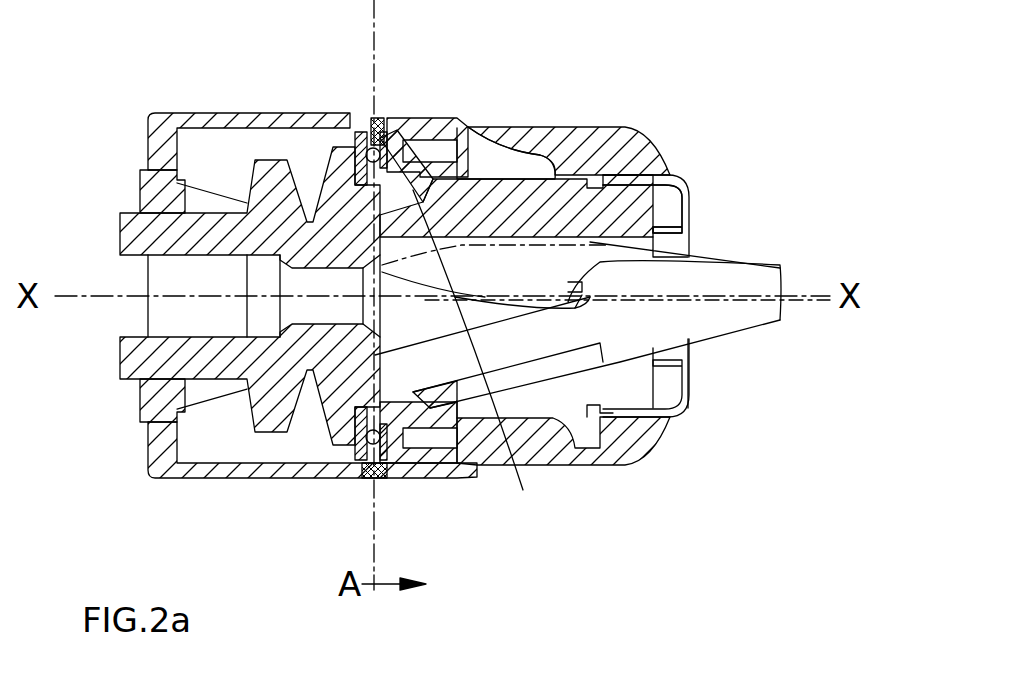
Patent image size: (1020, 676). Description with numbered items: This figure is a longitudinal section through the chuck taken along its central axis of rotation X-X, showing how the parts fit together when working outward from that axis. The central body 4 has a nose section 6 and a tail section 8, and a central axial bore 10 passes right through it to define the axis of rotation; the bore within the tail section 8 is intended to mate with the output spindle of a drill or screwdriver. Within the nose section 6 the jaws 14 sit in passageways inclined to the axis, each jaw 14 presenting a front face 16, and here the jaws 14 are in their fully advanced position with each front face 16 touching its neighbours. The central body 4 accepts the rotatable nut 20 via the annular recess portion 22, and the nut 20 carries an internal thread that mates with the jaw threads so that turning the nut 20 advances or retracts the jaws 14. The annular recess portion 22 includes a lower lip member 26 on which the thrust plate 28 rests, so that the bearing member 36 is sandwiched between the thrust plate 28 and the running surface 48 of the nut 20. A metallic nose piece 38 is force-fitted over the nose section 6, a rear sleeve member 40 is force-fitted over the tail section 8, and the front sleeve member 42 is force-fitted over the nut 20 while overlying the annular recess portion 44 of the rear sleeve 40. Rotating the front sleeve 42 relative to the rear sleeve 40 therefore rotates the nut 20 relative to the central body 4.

The central body 4 is at (228, 378).
The nose section 6 is at (630, 213).
The tail section 8 is at (140, 228).
The central axial bore 10 is at (148, 275).
The jaw 14 is at (562, 335).
The front face 16 is at (705, 318).
The rotatable nut 20 is at (430, 440).
The annular recess portion 22 is at (495, 339).
The lower lip member 26 is at (362, 152).
The thrust plate 28 is at (362, 135).
The bearing member element 36 is at (405, 125).
The metallic nose piece 38 is at (676, 176).
The rear sleeve member 40 is at (150, 129).
The front sleeve member 42 is at (612, 128).
The annular recess portion of the rear sleeve 44 is at (362, 478).
The running surface 48 is at (471, 127).